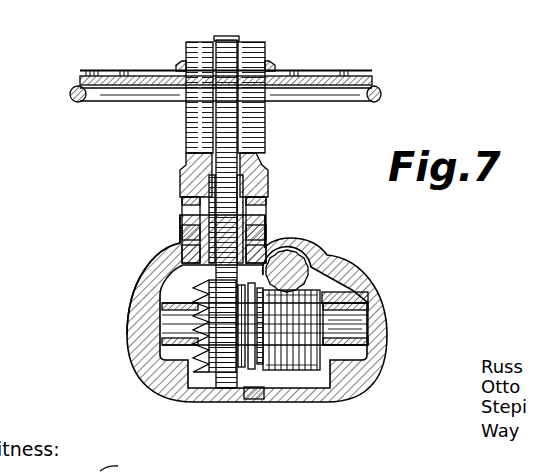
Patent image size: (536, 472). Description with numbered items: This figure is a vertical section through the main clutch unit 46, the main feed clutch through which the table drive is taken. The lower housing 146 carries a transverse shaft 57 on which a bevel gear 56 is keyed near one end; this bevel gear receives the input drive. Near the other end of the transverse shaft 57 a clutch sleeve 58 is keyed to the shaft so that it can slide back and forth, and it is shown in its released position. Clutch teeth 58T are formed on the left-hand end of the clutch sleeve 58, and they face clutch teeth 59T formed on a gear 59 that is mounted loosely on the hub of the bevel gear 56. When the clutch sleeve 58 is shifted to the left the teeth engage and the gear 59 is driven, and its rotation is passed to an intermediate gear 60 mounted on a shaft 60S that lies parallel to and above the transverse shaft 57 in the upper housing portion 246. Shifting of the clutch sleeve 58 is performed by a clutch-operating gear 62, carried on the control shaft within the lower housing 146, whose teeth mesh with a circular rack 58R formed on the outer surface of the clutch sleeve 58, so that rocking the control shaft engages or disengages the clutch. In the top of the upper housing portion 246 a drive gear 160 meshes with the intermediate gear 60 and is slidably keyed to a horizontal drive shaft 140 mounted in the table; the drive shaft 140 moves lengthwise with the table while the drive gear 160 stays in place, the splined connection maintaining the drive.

The horizontal drive shaft 140 is at (96, 96).
The drive gear 160 is at (222, 38).
The intermediate gear 60 is at (228, 150).
The shaft 60S is at (270, 200).
The upper housing portion 246 is at (182, 158).
The bevel gear 56 is at (192, 268).
The main clutch unit 46 is at (128, 313).
The clutch-operating gear 62 is at (292, 272).
The clutch sleeve 58 is at (333, 292).
The lower housing 146 is at (380, 304).
The transverse shaft 57 is at (343, 333).
The gear 59 is at (220, 375).
The clutch teeth 59T is at (242, 370).
The clutch teeth 58T is at (257, 372).
The circular rack 58R is at (298, 372).